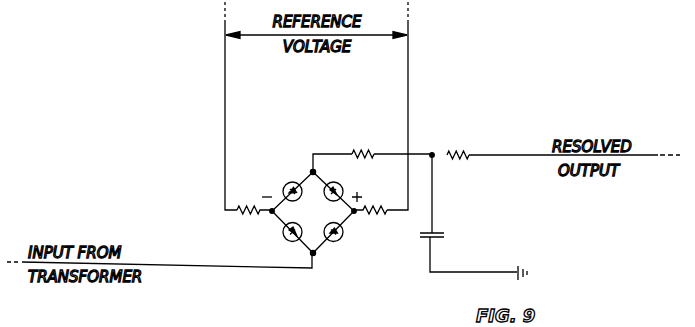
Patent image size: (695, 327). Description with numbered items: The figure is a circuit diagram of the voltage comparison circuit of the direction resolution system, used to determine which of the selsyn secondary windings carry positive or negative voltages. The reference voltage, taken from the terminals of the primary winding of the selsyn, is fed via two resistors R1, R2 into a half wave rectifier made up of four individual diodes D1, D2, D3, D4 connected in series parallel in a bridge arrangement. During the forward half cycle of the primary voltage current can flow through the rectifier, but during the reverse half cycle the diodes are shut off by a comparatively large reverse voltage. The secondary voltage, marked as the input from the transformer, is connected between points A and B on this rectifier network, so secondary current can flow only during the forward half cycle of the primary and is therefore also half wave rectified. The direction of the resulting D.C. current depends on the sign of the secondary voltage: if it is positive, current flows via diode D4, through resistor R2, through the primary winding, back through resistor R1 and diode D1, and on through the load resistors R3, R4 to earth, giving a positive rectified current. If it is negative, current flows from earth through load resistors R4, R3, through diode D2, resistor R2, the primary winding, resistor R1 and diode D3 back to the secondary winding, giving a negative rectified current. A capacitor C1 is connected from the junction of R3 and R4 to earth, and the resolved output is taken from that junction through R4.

The resistor R1 is at (254, 222).
The resistor R2 is at (372, 222).
The load resistor R3 is at (363, 143).
The load resistor R4 is at (458, 144).
The capacitor C1 is at (441, 237).
The diode D1 is at (280, 188).
The diode D2 is at (346, 188).
The diode D3 is at (280, 240).
The diode D4 is at (345, 240).
The point A is at (314, 254).
The point B is at (311, 170).